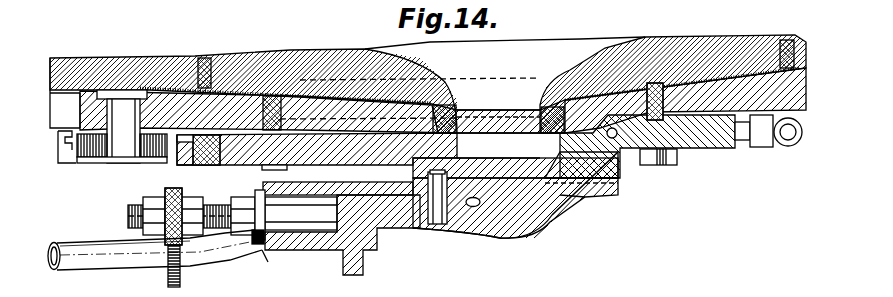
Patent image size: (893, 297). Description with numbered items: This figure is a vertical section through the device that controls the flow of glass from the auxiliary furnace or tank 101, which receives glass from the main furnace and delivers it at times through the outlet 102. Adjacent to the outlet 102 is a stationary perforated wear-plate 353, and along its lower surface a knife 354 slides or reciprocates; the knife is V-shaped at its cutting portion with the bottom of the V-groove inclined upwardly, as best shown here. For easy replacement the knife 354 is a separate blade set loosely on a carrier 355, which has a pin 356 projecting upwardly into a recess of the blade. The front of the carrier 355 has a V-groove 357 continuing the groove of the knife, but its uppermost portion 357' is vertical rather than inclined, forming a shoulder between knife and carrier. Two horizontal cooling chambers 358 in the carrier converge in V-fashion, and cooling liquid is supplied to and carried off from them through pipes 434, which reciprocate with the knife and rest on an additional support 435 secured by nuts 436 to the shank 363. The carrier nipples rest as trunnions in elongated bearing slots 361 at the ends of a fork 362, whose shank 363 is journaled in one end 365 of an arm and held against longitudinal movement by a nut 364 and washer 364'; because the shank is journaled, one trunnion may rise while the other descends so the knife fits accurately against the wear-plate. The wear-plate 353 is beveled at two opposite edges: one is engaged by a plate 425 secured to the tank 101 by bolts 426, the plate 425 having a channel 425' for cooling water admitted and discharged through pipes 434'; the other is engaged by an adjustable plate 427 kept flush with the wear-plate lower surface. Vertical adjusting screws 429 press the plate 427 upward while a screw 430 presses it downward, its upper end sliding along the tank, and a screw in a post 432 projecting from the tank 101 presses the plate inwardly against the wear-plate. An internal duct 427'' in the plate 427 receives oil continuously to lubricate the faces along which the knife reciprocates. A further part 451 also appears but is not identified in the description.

The auxiliary furnace or tank 101 is at (147, 70).
The outlet 102 is at (498, 113).
The wear-plate 353 is at (545, 148).
The knife 354 is at (588, 179).
The carrier 355 is at (430, 228).
The pin 356 is at (443, 228).
The V-groove 357 is at (491, 230).
The uppermost portion of the V-groove 357' is at (585, 190).
The cooling chambers 358 is at (482, 208).
The bearing slots 361 is at (592, 193).
The fork 362 is at (477, 232).
The shank 363 is at (130, 209).
The nut 364 is at (248, 261).
The washer 364' is at (282, 273).
The end of the arm 365 is at (326, 255).
The plate 425 is at (690, 148).
The channel 425' is at (664, 137).
The bolts 426 is at (678, 157).
The adjustable plate 427 is at (317, 161).
The internal duct 427'' is at (338, 181).
The adjusting screws 429 is at (276, 170).
The screw 430 is at (178, 168).
The post 432 is at (118, 166).
The pipes 434 is at (155, 263).
The pipes 434' is at (793, 153).
The additional support 435 is at (170, 272).
The nuts 436 is at (148, 204).
The clip 451 is at (72, 165).